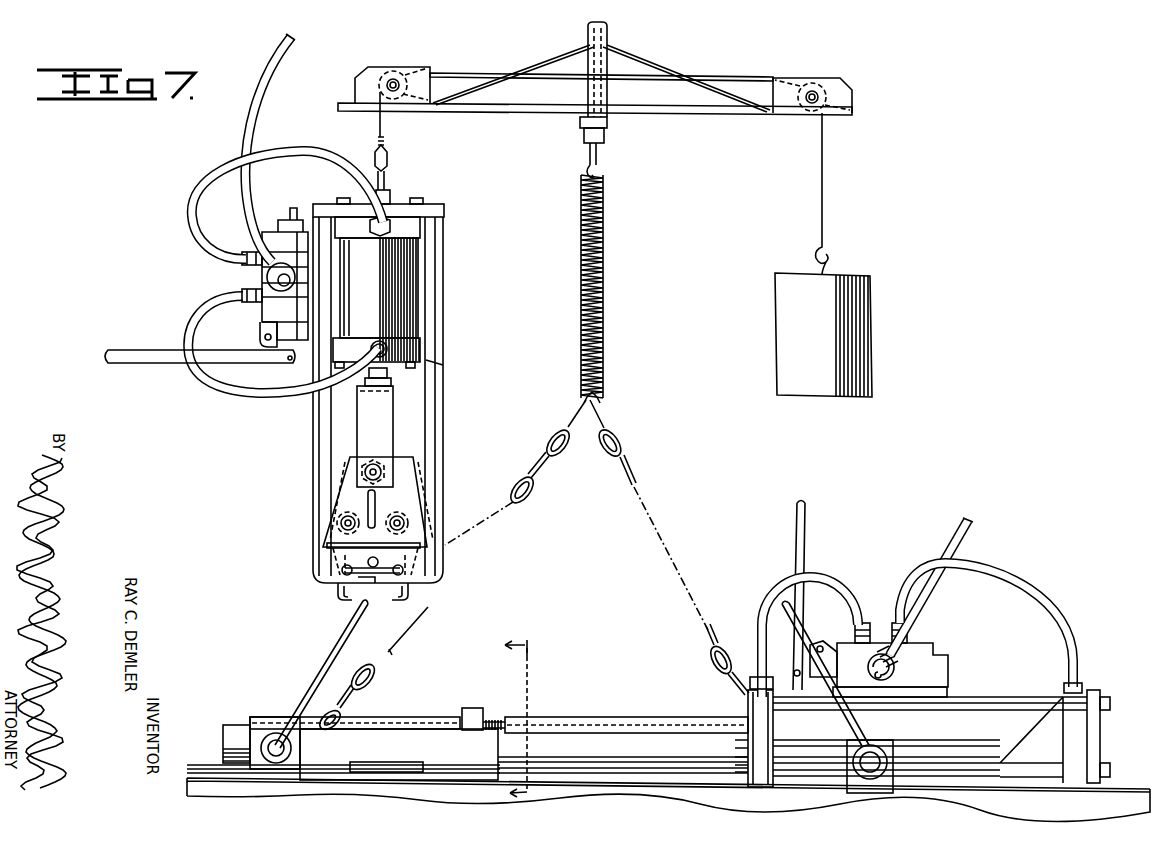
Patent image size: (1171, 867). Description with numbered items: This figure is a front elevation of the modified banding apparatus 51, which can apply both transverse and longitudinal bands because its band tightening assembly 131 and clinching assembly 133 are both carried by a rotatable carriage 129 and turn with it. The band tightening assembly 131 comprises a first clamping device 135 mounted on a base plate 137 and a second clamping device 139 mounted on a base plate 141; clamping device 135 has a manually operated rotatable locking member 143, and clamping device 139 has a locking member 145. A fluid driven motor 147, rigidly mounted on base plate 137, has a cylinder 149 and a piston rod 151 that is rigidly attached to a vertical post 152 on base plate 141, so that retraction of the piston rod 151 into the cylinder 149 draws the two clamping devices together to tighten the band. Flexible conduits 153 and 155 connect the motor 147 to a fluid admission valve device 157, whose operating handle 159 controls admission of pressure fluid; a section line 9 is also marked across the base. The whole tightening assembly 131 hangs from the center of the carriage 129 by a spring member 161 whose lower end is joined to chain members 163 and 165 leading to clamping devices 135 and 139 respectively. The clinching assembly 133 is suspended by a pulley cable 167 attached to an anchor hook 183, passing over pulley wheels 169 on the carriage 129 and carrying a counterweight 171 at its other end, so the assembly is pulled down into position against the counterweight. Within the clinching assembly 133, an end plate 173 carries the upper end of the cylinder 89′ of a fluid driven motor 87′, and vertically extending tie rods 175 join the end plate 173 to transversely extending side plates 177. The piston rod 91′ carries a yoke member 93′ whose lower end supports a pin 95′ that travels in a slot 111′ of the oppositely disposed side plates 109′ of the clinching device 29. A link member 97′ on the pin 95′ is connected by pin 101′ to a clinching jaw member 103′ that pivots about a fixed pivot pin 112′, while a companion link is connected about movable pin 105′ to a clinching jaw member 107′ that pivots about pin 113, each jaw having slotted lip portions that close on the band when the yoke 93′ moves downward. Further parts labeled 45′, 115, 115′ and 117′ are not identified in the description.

The rotatable carriage 129 is at (711, 121).
The pulley wheels 169 is at (402, 79).
The pulley cable 167 is at (383, 145).
The anchor hook 183 is at (387, 173).
The end plate 173 is at (405, 204).
The tie rods 175 is at (315, 452).
The clinching assembly 133 is at (476, 339).
The spring member 161 is at (605, 282).
The counterweight 171 is at (874, 304).
The banding apparatus 51 is at (908, 217).
The chain member 165 is at (550, 432).
The chain member 163 is at (626, 438).
The fluid driven motor 87′ is at (452, 293).
The cylinder 89′ is at (406, 288).
The piston rod 91′ is at (390, 373).
The yoke member 93′ is at (395, 428).
The pin 95′ is at (398, 470).
The link member 97′ is at (402, 500).
The side plates 109′ is at (411, 490).
The slot 111′ is at (368, 503).
The pin 101′ is at (408, 523).
The movable pin 105′ is at (338, 526).
The clinching device 29 is at (446, 540).
The side plates 177 is at (327, 546).
The clinching jaw member 103′ is at (421, 558).
The clinching jaw member 107′ is at (341, 568).
The hose 117′ is at (270, 401).
The pin 113 is at (339, 590).
The fixed pivot pin 112′ is at (412, 590).
The link rod 115 is at (360, 605).
The hose 115′ is at (313, 158).
The valve 45′ is at (256, 276).
The base plate 137 is at (1102, 791).
The base plate 141 is at (216, 744).
The locking member 145 is at (241, 727).
The second clamping device 139 is at (410, 712).
The vertical post 152 is at (430, 736).
The piston rod 151 is at (585, 712).
The fluid driven motor 147 is at (731, 712).
The cylinder 149 is at (985, 705).
The locking member 143 is at (903, 736).
The first clamping device 135 is at (889, 559).
The fluid admission valve device 157 is at (926, 650).
The operating handle 159 is at (805, 526).
The flexible conduit 153 is at (840, 572).
The flexible conduit 155 is at (1025, 581).
The section line 9 is at (522, 717).
The band tightening assembly 131 is at (631, 674).